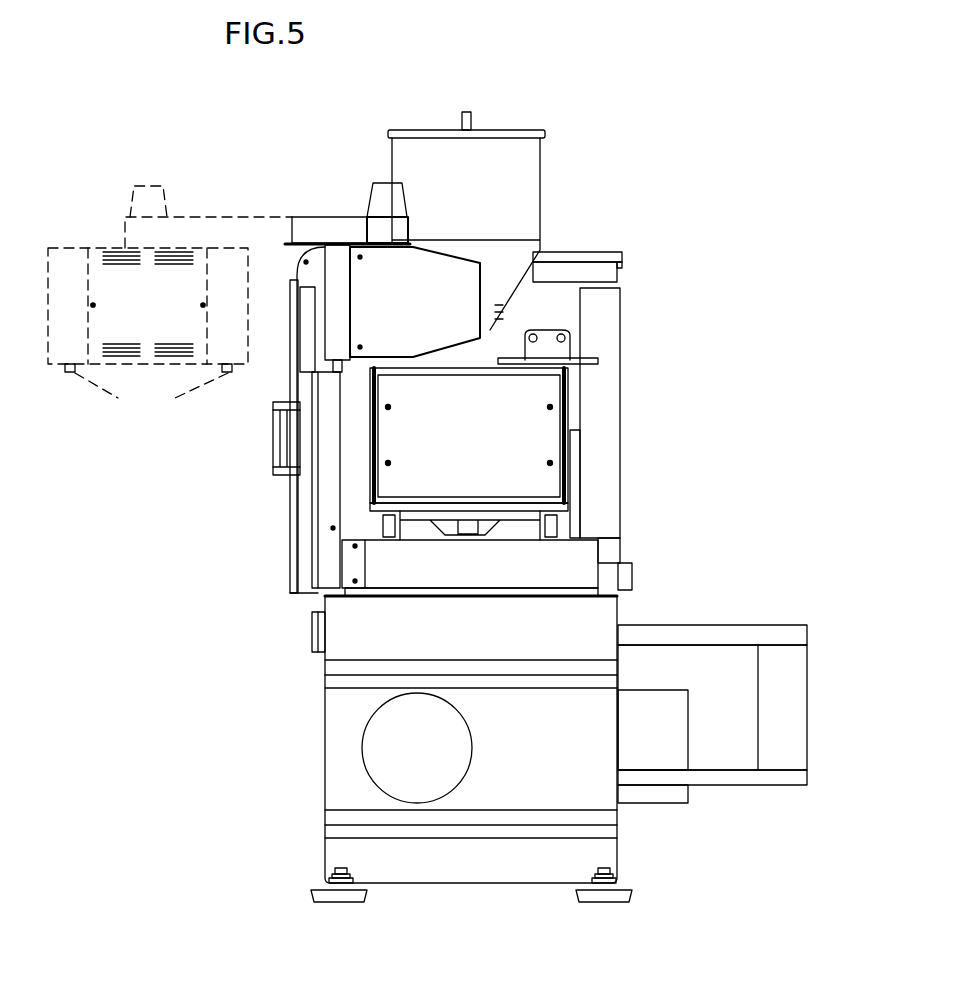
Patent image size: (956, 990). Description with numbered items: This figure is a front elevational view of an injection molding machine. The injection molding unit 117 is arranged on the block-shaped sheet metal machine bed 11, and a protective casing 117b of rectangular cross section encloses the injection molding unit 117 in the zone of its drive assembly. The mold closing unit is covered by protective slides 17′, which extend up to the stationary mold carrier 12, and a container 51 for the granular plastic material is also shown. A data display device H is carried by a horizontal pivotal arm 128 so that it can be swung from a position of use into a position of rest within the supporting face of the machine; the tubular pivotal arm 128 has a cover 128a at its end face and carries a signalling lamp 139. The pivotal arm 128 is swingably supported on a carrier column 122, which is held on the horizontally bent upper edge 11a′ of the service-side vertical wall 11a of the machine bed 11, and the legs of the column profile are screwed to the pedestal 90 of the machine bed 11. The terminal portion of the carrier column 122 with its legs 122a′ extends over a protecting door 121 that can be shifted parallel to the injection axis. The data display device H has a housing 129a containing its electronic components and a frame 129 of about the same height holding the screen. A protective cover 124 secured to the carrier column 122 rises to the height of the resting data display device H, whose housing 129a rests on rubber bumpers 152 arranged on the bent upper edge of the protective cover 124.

The machine bed 11 is at (340, 785).
The service-side vertical wall 11a is at (325, 765).
The horizontally bent upper edge 11a′ is at (330, 615).
The stationary mold carrier 12 is at (550, 302).
The protective slides 17′ is at (295, 497).
The container for granular plastic material 51 is at (480, 190).
The pedestal 90 is at (527, 567).
The injection molding unit 117 is at (652, 464).
The protective casing 117b is at (491, 450).
The protecting door 121 is at (308, 520).
The carrier column 122 is at (317, 360).
The legs 122a′ is at (302, 270).
The protective cover 124 is at (328, 530).
The pivotal arm 128 is at (308, 214).
The cover 128a is at (373, 226).
The frame 129 is at (333, 243).
The housing 129a is at (412, 280).
The signalling lamp 139 is at (387, 194).
The rubber bumpers 152 is at (338, 365).
The data display device H is at (492, 250).